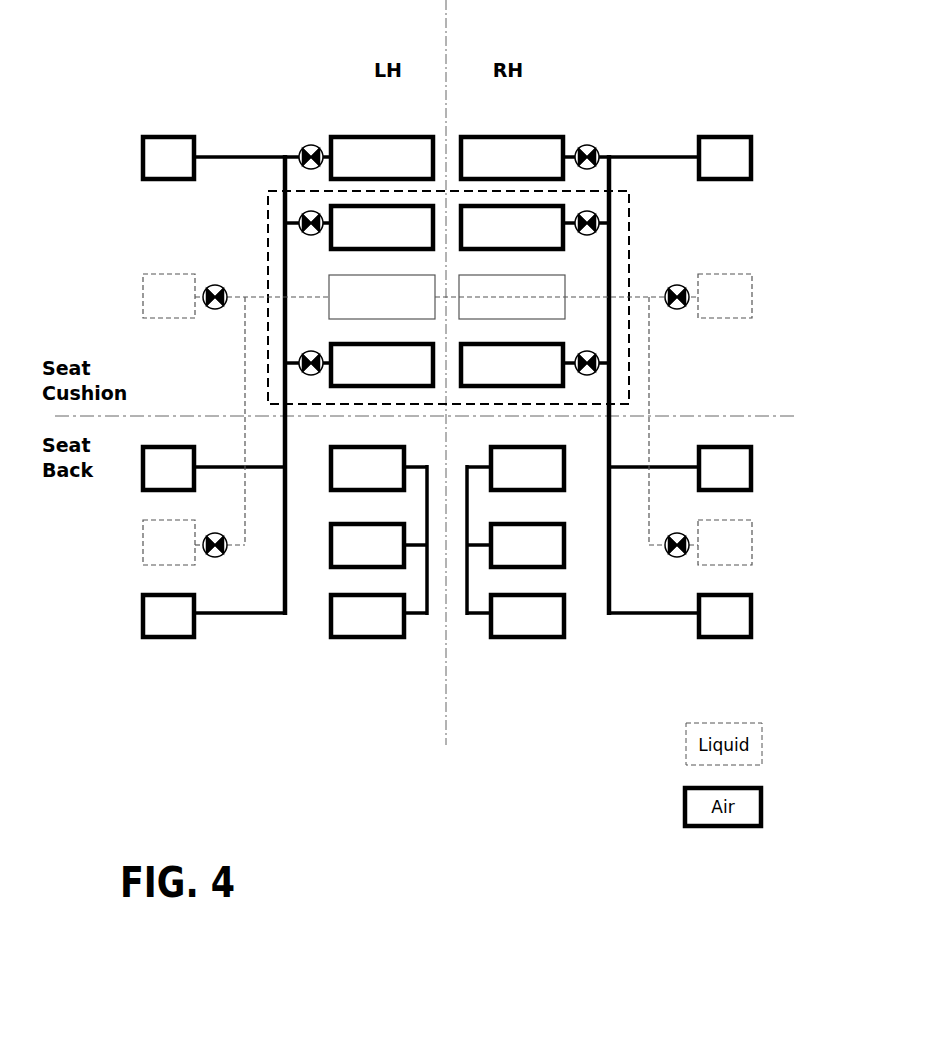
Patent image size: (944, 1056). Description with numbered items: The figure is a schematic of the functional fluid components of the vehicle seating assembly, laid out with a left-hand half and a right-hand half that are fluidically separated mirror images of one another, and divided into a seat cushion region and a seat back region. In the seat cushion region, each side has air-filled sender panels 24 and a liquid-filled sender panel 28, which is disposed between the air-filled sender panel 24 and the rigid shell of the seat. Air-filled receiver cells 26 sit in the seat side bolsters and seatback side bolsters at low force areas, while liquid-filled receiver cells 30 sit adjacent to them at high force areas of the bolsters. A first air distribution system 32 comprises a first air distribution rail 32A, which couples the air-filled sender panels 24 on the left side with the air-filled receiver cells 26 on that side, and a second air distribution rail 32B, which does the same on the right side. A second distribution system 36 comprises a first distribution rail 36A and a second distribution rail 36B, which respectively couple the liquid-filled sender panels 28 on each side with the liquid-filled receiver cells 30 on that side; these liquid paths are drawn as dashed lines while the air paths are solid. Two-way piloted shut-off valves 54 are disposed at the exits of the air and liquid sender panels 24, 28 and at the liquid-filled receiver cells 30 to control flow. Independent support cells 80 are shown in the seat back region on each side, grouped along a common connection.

The air-filled sender panel 24 is at (375, 240).
The air-filled receiver cell 26 is at (161, 171).
The liquid-filled sender panel 28 is at (375, 310).
The liquid-filled receiver cell 30 is at (162, 309).
The first air distribution system 32 is at (423, 449).
The first air distribution rail 32A is at (287, 586).
The second air distribution rail 32B is at (607, 592).
The second distribution system 36 is at (783, 372).
The first distribution rail 36A is at (245, 367).
The second distribution rail 36B is at (649, 377).
The two-way piloted shut-off valve 54 is at (303, 148).
The independent support cell 80 is at (360, 481).